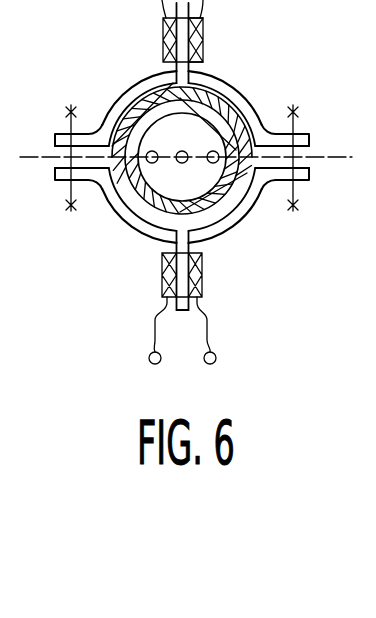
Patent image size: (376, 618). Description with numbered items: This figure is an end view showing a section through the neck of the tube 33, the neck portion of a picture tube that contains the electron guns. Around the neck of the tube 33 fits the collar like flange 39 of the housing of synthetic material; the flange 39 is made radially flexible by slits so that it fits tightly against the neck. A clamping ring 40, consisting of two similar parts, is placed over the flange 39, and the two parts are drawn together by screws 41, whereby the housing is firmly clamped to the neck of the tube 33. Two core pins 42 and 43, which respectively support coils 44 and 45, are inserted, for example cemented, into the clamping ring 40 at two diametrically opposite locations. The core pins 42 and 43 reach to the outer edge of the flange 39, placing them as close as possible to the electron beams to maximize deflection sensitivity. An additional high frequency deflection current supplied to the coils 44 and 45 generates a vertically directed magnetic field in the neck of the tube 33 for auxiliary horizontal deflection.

The neck portion 33 is at (120, 207).
The collar like flange 39 is at (232, 211).
The clamping ring 40 is at (254, 208).
The screws 41 is at (63, 134).
The core pin 42 is at (163, 32).
The core pin 43 is at (183, 311).
The coil 44 is at (203, 32).
The coil 45 is at (202, 273).